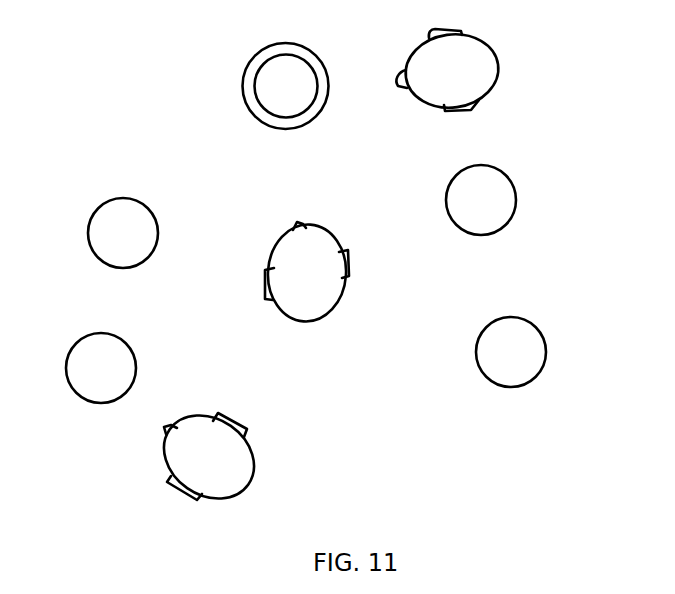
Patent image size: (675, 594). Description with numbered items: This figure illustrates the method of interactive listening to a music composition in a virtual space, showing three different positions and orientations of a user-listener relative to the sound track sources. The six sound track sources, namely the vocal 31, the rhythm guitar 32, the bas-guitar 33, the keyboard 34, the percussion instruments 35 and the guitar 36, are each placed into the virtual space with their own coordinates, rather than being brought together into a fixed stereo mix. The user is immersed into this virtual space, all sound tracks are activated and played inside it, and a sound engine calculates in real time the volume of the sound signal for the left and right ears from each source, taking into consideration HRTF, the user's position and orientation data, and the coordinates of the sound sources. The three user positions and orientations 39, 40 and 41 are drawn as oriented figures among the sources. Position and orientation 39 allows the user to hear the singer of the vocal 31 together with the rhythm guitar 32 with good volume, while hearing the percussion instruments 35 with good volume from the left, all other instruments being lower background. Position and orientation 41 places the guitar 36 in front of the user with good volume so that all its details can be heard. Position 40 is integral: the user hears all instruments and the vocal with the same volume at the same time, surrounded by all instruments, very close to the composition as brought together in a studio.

The vocal 31 is at (263, 73).
The rhythm guitar 32 is at (242, 90).
The bas-guitar 33 is at (102, 203).
The keyboard 34 is at (545, 348).
The percussion instruments 35 is at (515, 190).
The guitar 36 is at (133, 348).
The user position and orientation 39 is at (498, 62).
The user position 40 is at (345, 298).
The user position and orientation 41 is at (252, 472).